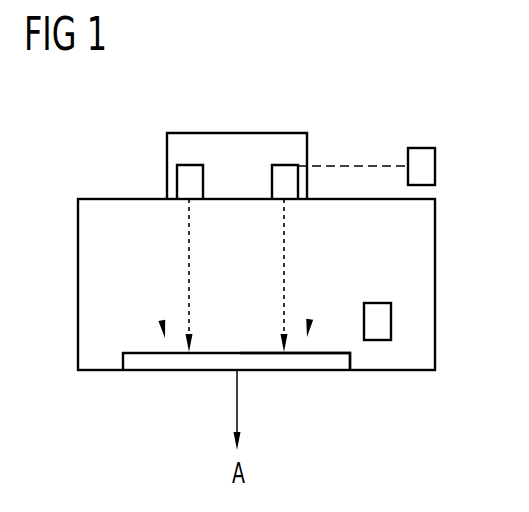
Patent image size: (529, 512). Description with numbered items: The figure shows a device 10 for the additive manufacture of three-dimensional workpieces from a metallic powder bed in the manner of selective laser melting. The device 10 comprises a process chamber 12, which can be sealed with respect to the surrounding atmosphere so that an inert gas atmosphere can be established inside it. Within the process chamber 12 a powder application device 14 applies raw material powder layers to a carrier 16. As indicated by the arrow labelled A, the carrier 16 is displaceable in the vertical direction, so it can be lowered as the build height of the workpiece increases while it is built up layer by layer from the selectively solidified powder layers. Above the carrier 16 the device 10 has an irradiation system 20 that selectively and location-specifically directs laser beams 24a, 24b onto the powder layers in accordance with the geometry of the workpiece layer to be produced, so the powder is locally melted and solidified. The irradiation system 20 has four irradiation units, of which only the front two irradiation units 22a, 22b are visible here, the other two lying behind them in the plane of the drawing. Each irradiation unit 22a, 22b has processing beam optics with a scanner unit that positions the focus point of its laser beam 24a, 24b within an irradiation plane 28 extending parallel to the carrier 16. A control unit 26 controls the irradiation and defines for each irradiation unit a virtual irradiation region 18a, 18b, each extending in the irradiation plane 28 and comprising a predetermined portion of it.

The device 10 is at (354, 111).
The process chamber 12 is at (389, 358).
The powder application device 14 is at (391, 320).
The carrier 16 is at (310, 319).
The irradiation region 18a is at (152, 353).
The irradiation region 18b is at (327, 350).
The irradiation system 20 is at (210, 133).
The irradiation unit 22a is at (177, 183).
The irradiation unit 22b is at (283, 165).
The laser beam 24a is at (189, 248).
The laser beam 24b is at (283, 245).
The control unit 26 is at (418, 148).
The irradiation plane 28 is at (162, 320).